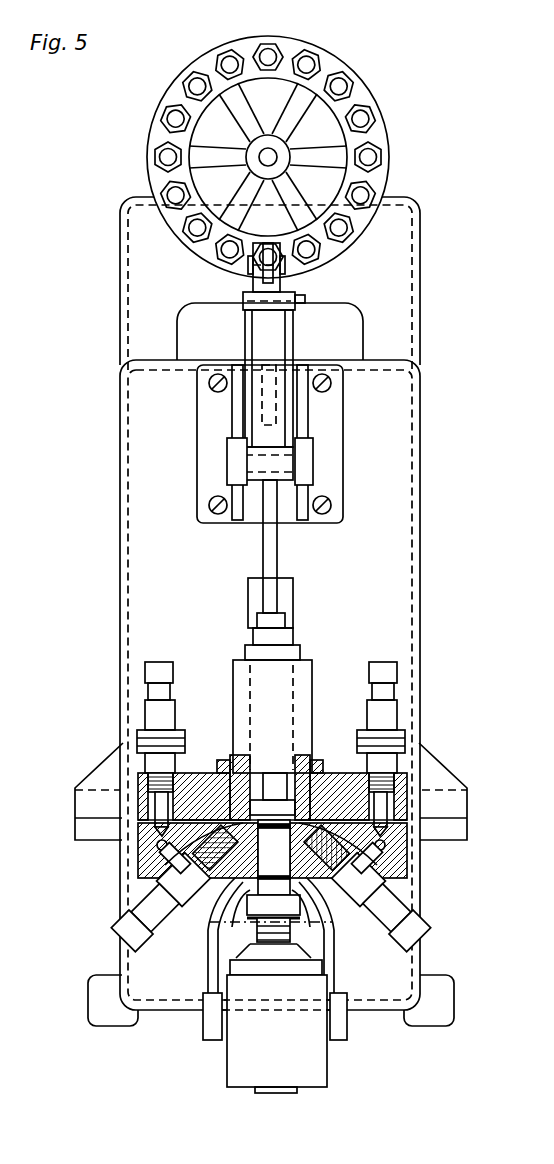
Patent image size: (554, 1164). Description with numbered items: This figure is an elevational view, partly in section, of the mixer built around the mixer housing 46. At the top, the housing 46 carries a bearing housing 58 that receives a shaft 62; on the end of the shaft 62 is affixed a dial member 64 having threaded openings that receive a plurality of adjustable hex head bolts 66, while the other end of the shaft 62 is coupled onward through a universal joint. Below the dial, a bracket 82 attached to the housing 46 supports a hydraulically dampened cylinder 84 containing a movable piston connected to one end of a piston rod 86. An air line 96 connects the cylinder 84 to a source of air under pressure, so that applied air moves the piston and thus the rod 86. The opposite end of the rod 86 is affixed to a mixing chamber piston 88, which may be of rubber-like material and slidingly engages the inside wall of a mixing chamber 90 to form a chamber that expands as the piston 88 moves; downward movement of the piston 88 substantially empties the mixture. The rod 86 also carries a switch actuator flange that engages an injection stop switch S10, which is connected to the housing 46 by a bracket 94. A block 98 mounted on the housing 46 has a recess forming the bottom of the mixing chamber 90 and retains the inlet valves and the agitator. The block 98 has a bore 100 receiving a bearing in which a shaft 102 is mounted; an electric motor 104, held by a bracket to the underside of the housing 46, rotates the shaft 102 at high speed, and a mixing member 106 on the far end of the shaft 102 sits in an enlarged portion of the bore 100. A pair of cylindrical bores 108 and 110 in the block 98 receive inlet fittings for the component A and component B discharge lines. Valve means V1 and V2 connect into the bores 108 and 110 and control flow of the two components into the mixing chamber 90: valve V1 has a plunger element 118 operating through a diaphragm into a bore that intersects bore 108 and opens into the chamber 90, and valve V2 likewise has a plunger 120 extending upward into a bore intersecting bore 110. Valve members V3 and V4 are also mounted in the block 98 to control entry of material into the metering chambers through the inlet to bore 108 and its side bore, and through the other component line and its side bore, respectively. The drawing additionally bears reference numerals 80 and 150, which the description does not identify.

The mixer housing 46 is at (420, 315).
The bearing housing 58 is at (160, 188).
The shaft 62 is at (277, 160).
The dial member 64 is at (157, 121).
The hex head bolts 66 is at (273, 52).
The spokes 80 is at (281, 238).
The bracket 82 is at (343, 407).
The hydraulically dampened cylinder 84 is at (245, 340).
The piston rod 86 is at (263, 545).
The mixing chamber piston 88 is at (283, 765).
The mixing chamber 90 is at (266, 772).
The bracket 94 is at (245, 655).
The air line 96 is at (305, 299).
The block 98 is at (138, 803).
The bore 100 is at (286, 943).
The shaft 102 is at (254, 935).
The electric motor 104 is at (327, 1067).
The mixing member 106 is at (273, 869).
The cylindrical bore 108 is at (201, 777).
The cylindrical bore 110 is at (338, 777).
The plunger element 118 is at (165, 858).
The plunger 120 is at (380, 858).
The clevis 150 is at (253, 283).
The injection stop switch S10 is at (293, 597).
The valve means V1 is at (143, 955).
The valve means V2 is at (400, 955).
The valve member V3 is at (173, 672).
The valve member V4 is at (369, 672).